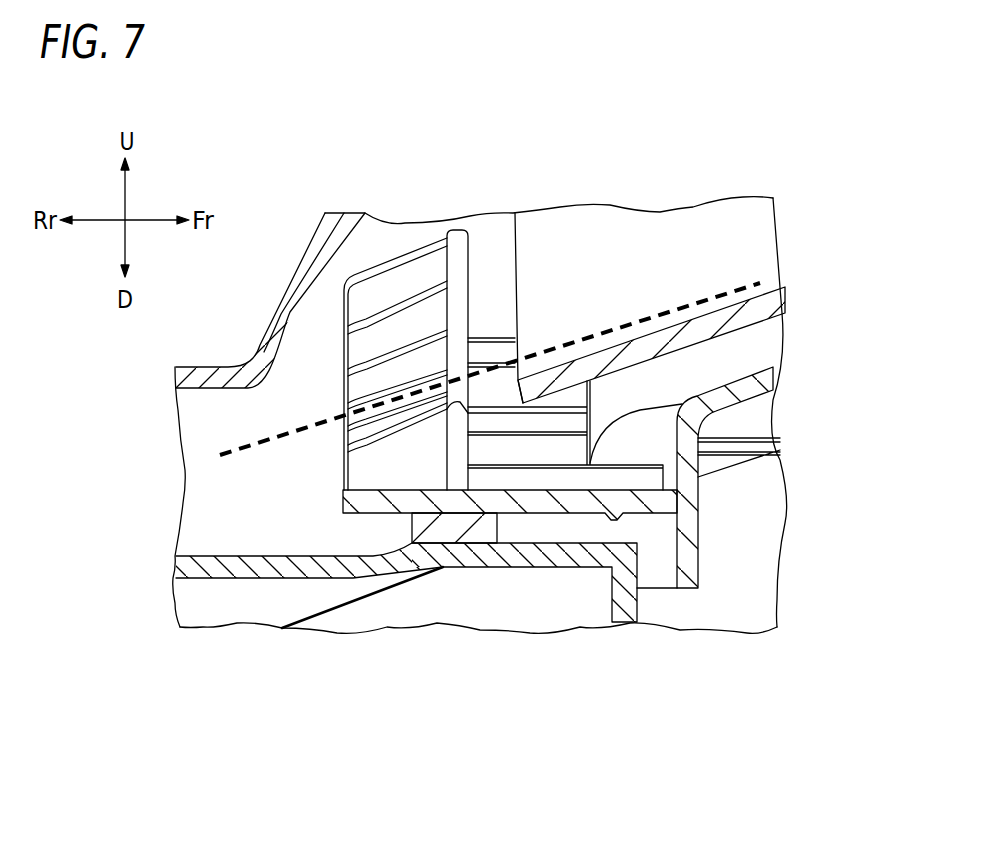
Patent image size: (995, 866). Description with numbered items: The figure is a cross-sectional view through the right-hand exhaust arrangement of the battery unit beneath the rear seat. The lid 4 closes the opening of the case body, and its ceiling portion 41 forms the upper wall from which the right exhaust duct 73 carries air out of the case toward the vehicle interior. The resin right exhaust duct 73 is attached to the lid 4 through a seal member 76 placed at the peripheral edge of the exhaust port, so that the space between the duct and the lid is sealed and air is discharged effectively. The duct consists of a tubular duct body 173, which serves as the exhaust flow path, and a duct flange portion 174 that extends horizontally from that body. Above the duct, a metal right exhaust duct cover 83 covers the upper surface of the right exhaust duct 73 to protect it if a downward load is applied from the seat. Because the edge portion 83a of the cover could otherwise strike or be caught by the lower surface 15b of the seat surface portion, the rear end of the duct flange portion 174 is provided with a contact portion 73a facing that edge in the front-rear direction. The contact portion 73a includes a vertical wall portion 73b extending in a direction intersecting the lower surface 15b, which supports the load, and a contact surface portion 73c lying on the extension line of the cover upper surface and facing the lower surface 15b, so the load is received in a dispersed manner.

The lid 4 is at (354, 580).
The ceiling portion 41 is at (235, 566).
The seal member 76 is at (473, 537).
The right exhaust duct 73 is at (603, 362).
The contact portion 73a is at (413, 413).
The vertical wall portion 73b is at (455, 457).
The contact surface portion 73c is at (380, 410).
The tubular duct body 173 is at (734, 402).
The duct flange portion 174 is at (567, 503).
The right exhaust duct cover 83 is at (690, 333).
The edge portion 83a is at (517, 390).
The lower surface 15b is at (703, 291).